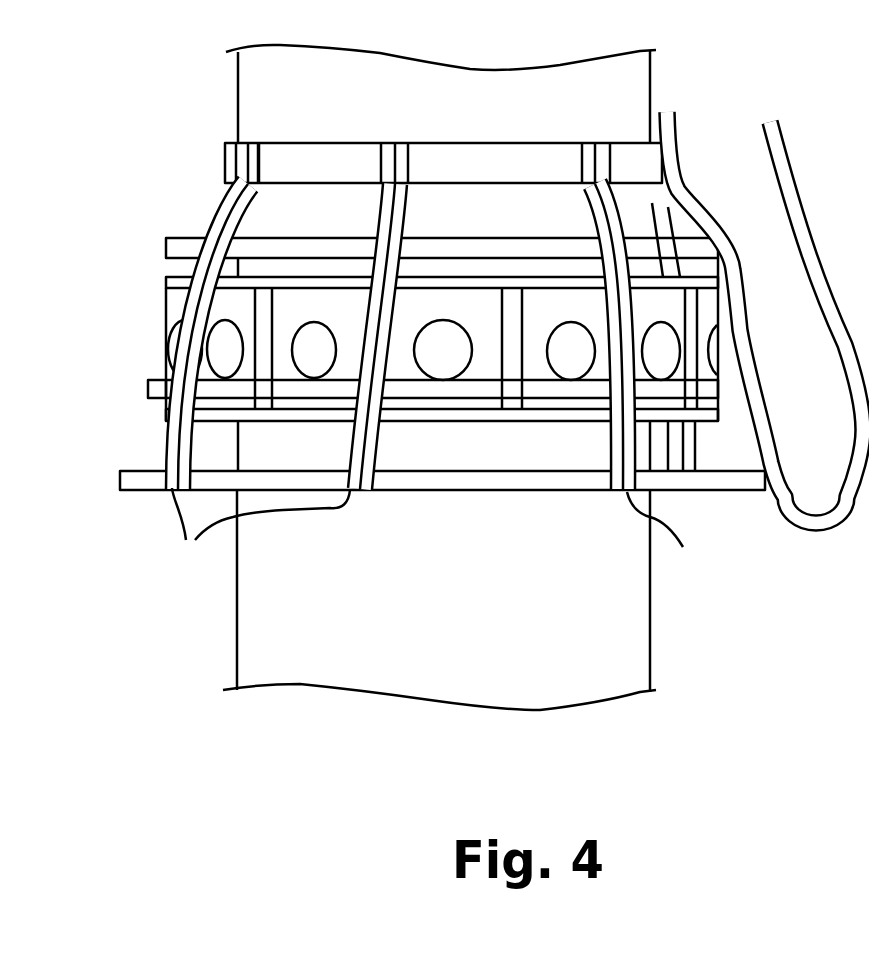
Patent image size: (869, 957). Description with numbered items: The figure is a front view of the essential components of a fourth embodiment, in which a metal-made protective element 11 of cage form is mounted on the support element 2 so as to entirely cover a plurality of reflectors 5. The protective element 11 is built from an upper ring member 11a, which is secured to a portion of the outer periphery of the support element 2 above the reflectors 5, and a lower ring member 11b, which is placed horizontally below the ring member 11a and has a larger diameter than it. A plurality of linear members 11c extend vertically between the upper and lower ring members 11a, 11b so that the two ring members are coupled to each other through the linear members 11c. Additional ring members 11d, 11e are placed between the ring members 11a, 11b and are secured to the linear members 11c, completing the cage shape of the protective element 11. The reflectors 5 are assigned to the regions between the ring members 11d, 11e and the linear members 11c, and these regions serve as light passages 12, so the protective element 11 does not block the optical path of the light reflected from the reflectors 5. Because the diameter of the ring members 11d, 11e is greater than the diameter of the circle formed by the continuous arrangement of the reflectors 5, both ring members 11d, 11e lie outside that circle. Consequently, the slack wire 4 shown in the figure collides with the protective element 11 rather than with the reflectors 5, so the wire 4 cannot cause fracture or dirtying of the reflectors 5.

The support element 2 is at (640, 623).
The wire 4 is at (812, 520).
The reflectors 5 is at (218, 348).
The protective element 11 is at (426, 312).
The ring member 11a is at (228, 167).
The ring member 11b is at (138, 488).
The linear members 11c is at (436, 537).
The ring member 11d is at (170, 250).
The ring member 11e is at (152, 386).
The light passages 12 is at (290, 300).